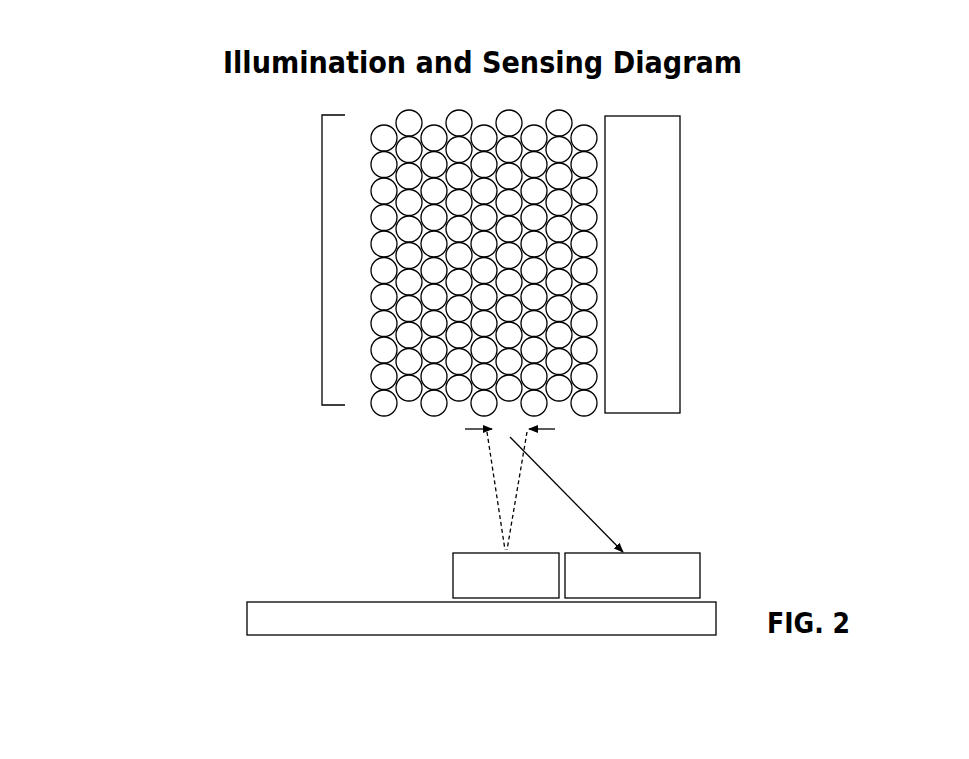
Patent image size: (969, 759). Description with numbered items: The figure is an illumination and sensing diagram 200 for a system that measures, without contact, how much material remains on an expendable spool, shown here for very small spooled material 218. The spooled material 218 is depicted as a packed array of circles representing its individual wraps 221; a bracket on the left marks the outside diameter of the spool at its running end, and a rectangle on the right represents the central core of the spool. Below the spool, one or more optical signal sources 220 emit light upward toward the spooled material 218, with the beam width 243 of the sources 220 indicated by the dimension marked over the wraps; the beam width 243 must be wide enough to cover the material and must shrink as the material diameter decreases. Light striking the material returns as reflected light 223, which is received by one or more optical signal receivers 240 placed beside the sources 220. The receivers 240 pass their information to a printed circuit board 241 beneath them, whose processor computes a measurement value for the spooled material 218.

The illumination and sensing diagram 200 is at (127, 44).
The very small spooled material 218 is at (505, 104).
The individual wraps 221 is at (433, 417).
The beam width 243 is at (495, 487).
The reflected light 223 is at (560, 487).
The optical signal sources 220 is at (452, 572).
The optical signal receivers 240 is at (703, 574).
The printed circuit board 241 is at (246, 617).